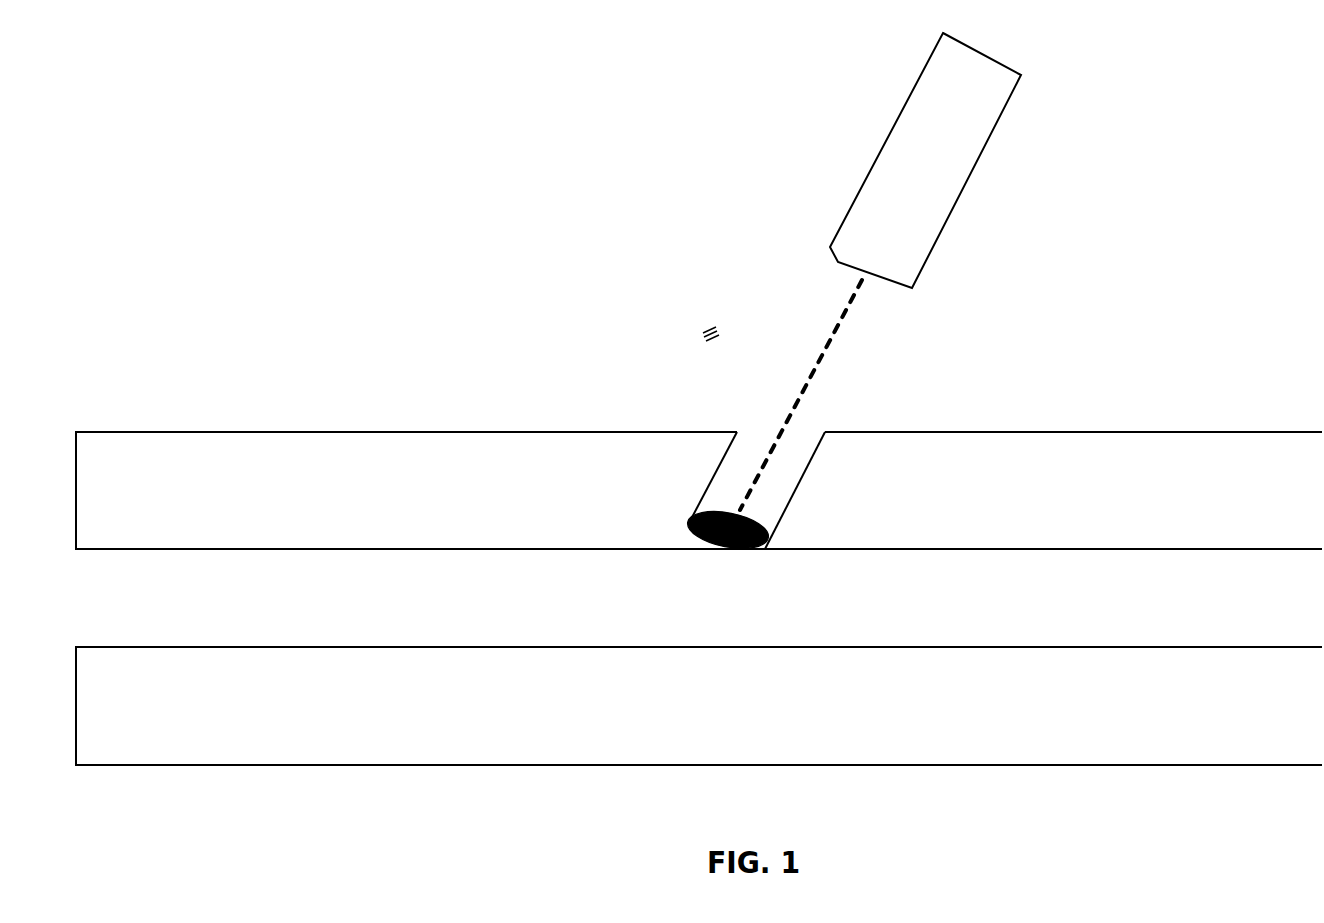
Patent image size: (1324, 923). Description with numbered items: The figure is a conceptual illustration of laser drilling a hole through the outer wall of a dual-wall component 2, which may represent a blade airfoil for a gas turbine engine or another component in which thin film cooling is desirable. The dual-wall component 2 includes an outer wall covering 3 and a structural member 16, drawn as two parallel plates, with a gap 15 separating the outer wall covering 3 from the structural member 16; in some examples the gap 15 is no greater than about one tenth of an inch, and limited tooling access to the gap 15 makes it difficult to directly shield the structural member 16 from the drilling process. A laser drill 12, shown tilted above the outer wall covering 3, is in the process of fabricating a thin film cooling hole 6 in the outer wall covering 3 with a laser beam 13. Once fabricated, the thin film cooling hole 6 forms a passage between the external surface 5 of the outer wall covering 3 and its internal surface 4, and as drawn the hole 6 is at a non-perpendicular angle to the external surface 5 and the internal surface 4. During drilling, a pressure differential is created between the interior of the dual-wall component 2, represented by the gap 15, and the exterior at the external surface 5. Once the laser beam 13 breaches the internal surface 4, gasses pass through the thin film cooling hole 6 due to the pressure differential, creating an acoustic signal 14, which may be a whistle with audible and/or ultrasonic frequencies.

The dual-wall component 2 is at (157, 258).
The outer wall covering 3 is at (206, 500).
The internal surface 4 is at (535, 560).
The external surface 5 is at (505, 422).
The thin film cooling hole 6 is at (791, 466).
The laser drill 12 is at (907, 176).
The laser beam 13 is at (840, 323).
The acoustic signal 14 is at (722, 341).
The gap 15 is at (796, 608).
The structural member 16 is at (219, 719).